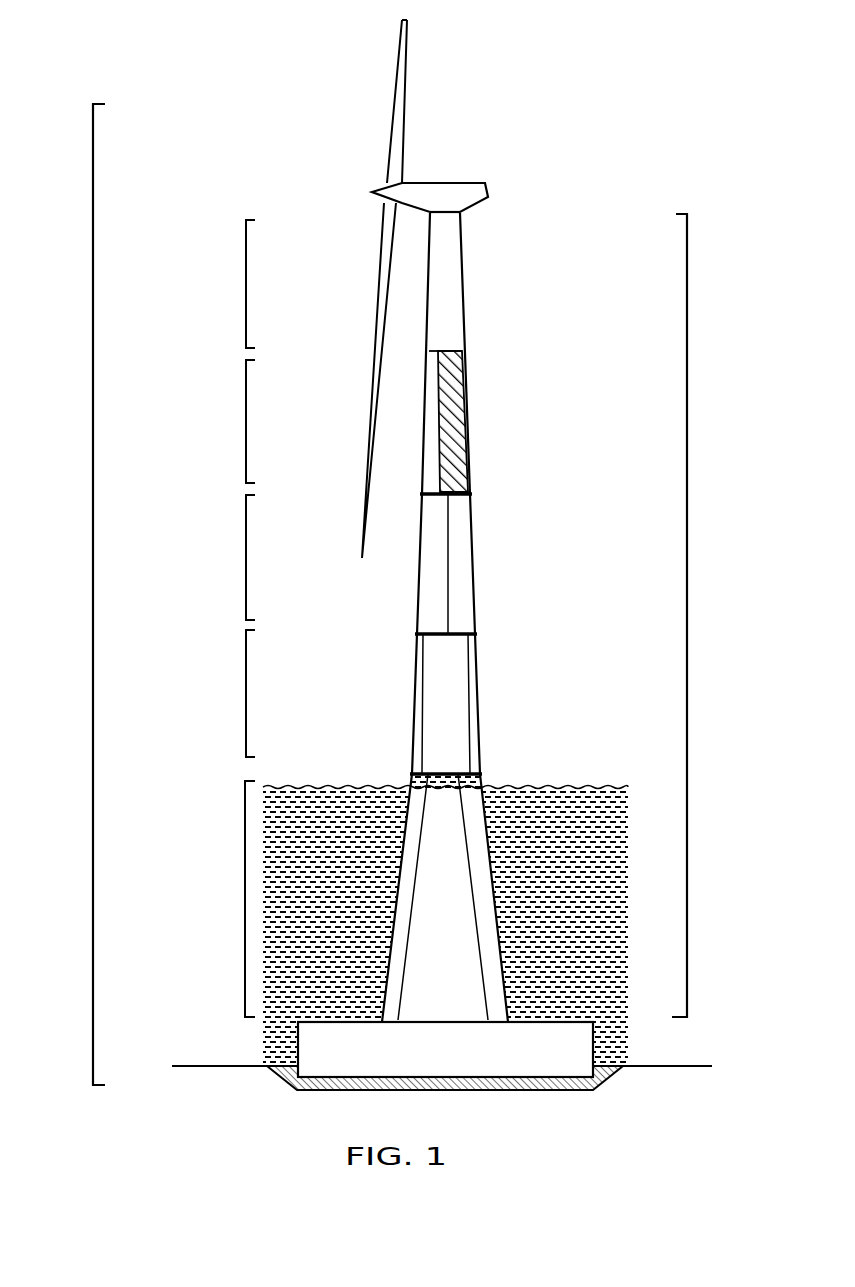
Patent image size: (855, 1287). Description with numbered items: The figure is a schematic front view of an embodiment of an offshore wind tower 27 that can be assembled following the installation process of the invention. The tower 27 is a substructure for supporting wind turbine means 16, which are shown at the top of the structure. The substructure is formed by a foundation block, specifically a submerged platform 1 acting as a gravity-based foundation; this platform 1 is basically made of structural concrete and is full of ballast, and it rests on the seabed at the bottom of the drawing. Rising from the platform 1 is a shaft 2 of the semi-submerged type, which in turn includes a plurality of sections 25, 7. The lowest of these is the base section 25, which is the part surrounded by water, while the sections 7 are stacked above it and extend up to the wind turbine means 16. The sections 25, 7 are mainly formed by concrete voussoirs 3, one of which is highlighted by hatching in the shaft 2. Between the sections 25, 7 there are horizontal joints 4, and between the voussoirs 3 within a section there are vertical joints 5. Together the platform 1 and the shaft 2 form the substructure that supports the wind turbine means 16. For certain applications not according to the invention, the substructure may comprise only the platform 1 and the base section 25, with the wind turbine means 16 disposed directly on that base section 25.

The submerged platform 1 is at (557, 1040).
The shaft 2 is at (687, 608).
The concrete voussoirs 3 is at (468, 422).
The horizontal joints 4 is at (465, 630).
The vertical joints 5 is at (468, 727).
The sections 7 is at (246, 690).
The wind turbine means 16 is at (451, 193).
The base section 25 is at (245, 899).
The offshore wind tower 27 is at (93, 632).